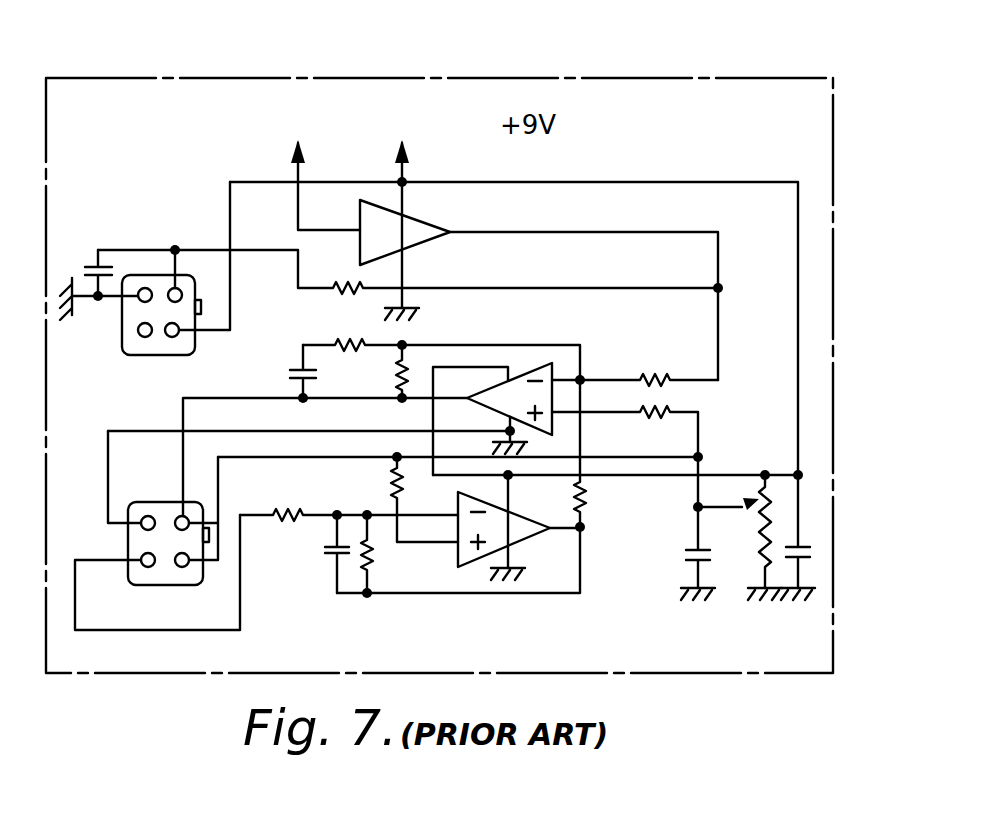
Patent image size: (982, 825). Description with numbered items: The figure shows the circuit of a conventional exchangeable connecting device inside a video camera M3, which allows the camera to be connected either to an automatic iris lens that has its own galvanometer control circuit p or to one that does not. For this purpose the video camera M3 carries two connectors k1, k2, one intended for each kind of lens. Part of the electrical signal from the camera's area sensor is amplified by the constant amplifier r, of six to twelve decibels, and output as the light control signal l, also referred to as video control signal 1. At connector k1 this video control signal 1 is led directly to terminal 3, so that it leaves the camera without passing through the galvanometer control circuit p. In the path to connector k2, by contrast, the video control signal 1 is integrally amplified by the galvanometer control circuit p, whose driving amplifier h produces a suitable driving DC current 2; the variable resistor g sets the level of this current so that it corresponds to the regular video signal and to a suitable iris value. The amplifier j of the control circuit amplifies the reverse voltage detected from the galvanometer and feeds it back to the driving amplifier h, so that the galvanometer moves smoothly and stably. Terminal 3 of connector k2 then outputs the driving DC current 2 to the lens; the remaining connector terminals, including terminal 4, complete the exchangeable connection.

The video camera M3 is at (505, 78).
The connector k1 is at (130, 268).
The connector k2 is at (205, 570).
The constant amplifier r is at (422, 218).
The light control signal l is at (724, 270).
The driving amplifier h is at (527, 375).
The amplifier j is at (520, 538).
The variable resistor g is at (748, 492).
The galvanometer control circuit p is at (488, 603).
The light control signal 1 is at (175, 337).
The driving DC current 2 is at (145, 337).
The terminal 3 is at (180, 289).
The relay terminal 4 is at (140, 300).